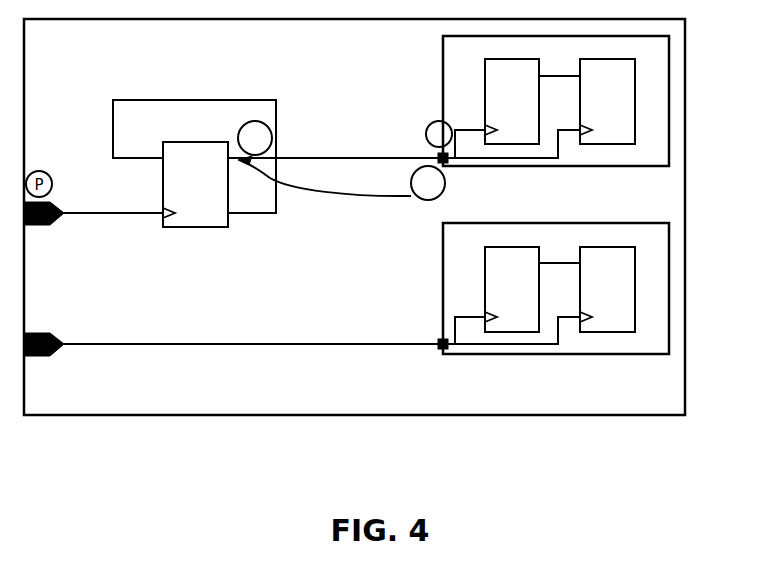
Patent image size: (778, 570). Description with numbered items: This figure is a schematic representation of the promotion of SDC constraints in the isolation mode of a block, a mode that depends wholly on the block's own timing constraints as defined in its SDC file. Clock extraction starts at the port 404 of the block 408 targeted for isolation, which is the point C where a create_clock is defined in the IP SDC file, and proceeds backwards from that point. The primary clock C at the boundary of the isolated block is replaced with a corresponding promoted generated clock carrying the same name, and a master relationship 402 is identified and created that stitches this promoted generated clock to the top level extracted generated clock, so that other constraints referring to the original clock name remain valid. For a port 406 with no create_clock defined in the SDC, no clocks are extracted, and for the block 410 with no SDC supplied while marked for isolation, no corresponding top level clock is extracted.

The master relationship 402 is at (275, 133).
The port 404 is at (432, 152).
The port 406 is at (440, 346).
The block 408 is at (669, 93).
The block 410 is at (669, 292).